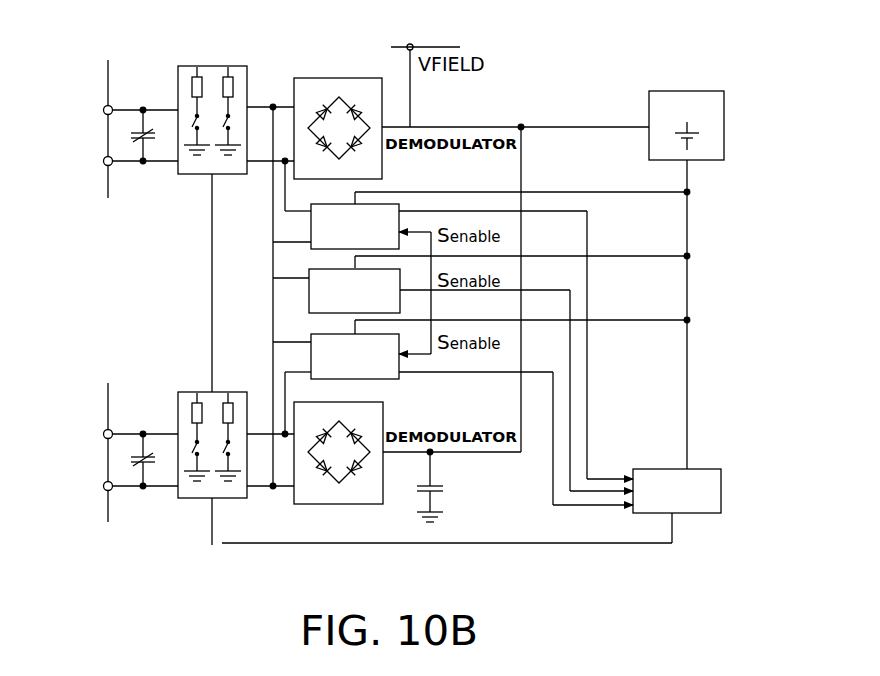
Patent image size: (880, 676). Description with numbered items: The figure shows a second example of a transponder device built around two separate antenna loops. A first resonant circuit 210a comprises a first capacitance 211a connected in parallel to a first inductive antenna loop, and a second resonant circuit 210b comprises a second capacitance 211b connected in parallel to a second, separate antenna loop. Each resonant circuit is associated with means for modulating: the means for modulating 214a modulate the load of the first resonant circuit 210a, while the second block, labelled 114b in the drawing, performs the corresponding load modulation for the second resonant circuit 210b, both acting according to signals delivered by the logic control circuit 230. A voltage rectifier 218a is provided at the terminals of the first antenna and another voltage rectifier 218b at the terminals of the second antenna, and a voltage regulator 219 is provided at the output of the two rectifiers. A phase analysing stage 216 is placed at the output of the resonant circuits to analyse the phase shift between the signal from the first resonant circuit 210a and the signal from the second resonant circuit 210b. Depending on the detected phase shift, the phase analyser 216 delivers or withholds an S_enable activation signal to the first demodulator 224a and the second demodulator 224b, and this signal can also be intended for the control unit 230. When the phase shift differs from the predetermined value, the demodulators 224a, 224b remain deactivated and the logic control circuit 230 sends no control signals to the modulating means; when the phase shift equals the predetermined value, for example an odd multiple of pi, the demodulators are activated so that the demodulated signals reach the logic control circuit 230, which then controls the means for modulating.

The first resonant circuit 210a is at (102, 133).
The first capacitance 211a is at (150, 134).
The means for modulating 214a is at (211, 82).
The voltage rectifier 218a is at (333, 90).
The first demodulator 224a is at (378, 218).
The phase analysing stage 216 is at (305, 292).
The second demodulator 224b is at (378, 363).
The voltage rectifier 218b is at (325, 496).
The second switch/resistor network 114b is at (207, 494).
The second capacitance 211b is at (150, 458).
The second resonant circuit 210b is at (96, 468).
The voltage regulator 219 is at (703, 153).
The logic control circuit 230 is at (700, 504).